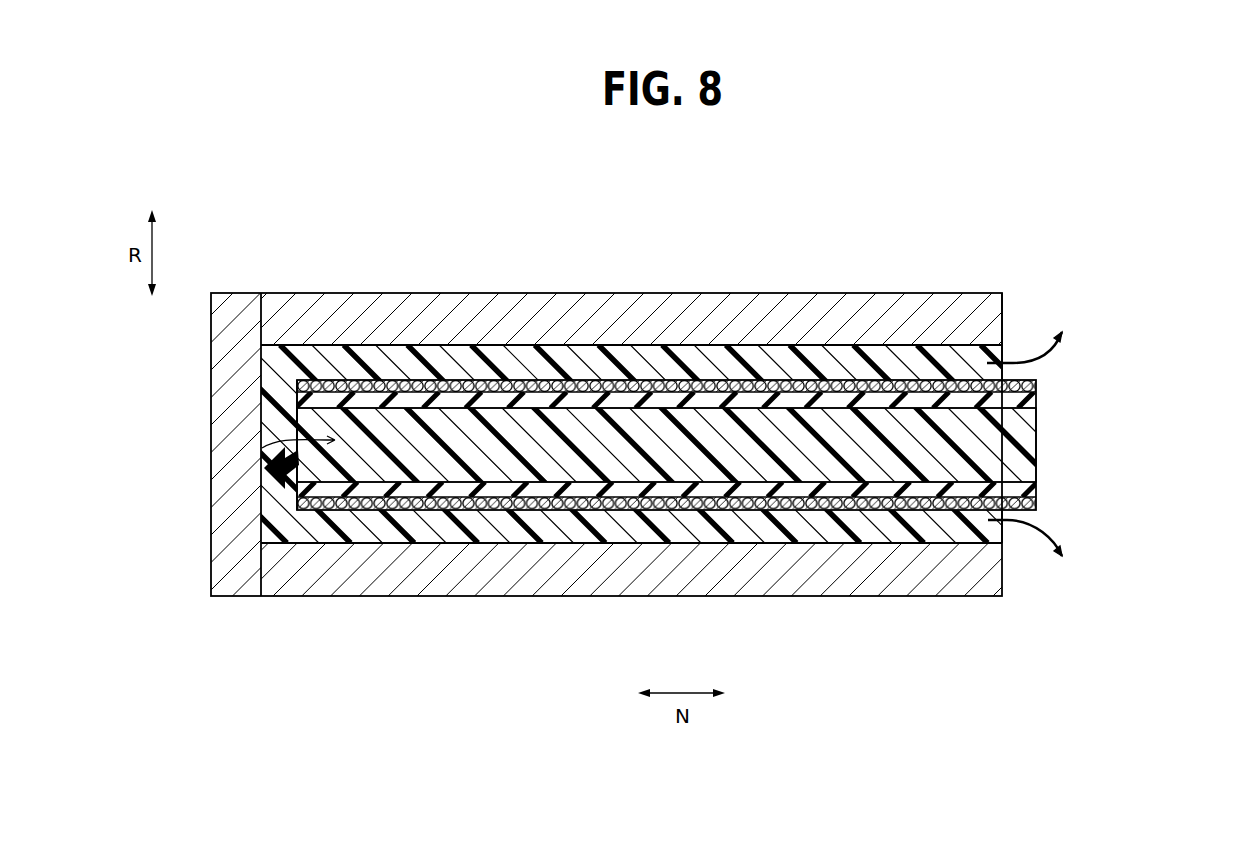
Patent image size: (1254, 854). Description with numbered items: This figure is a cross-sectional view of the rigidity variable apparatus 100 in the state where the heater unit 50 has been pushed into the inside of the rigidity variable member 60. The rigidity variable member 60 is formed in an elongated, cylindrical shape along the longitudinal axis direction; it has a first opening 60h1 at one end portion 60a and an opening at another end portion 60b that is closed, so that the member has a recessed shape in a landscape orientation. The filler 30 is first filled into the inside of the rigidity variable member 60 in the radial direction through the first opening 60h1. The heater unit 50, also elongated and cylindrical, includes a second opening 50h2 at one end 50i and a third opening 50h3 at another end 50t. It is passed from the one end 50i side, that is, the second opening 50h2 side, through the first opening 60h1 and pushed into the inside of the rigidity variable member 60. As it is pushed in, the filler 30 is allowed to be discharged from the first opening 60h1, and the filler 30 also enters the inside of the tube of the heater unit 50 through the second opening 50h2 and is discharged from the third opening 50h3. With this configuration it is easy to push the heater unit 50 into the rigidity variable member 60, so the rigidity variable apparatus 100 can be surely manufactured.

The rigidity variable apparatus 100 is at (1118, 226).
The rigidity variable member 60 is at (674, 305).
The one end portion 60a is at (1002, 307).
The another end portion 60b is at (262, 324).
The first opening 60h1 is at (1014, 520).
The filler 30 is at (735, 360).
The heater unit 50 is at (790, 378).
The another end 50t is at (1036, 397).
The third opening 50h3 is at (1048, 452).
The one end 50i is at (282, 420).
The second opening 50h2 is at (262, 448).